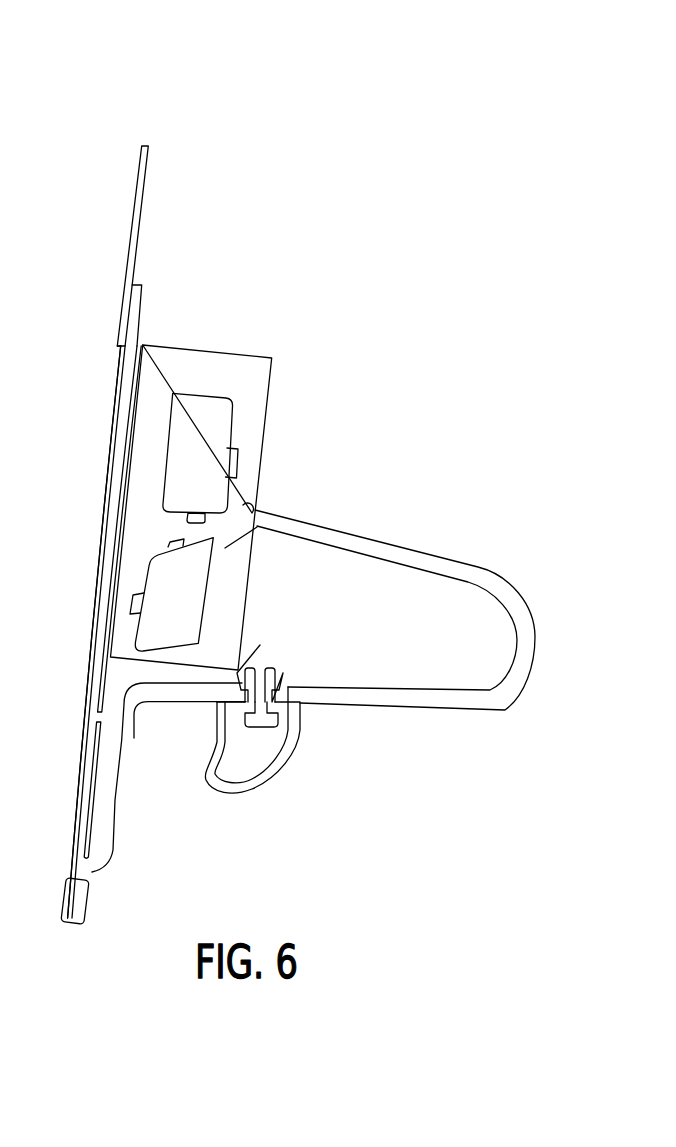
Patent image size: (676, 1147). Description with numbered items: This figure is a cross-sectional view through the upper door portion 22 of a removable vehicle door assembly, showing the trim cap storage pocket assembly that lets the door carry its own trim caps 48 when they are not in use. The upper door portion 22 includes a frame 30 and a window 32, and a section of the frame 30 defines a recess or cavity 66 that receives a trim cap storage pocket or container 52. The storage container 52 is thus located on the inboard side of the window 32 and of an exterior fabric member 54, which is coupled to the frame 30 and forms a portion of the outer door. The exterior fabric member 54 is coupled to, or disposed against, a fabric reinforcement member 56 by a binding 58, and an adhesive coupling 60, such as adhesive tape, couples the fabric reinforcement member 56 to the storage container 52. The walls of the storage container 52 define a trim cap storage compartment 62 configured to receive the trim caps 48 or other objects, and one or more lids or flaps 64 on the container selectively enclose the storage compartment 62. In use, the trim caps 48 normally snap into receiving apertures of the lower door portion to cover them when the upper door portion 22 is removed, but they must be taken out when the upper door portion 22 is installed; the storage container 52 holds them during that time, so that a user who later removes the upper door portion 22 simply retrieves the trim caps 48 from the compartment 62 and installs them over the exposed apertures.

The upper door portion 22 is at (277, 78).
The frame 30 is at (527, 645).
The window 32 is at (140, 160).
The trim caps 48 is at (235, 410).
The trim cap storage pocket or container 52 is at (173, 665).
The exterior fabric member 54 is at (88, 717).
The fabric reinforcement member 56 is at (145, 303).
The binding 58 is at (68, 925).
The adhesive coupling 60 is at (128, 458).
The trim cap storage compartment 62 is at (225, 548).
The lid or flap 64 is at (254, 372).
The recess or cavity 66 is at (245, 503).